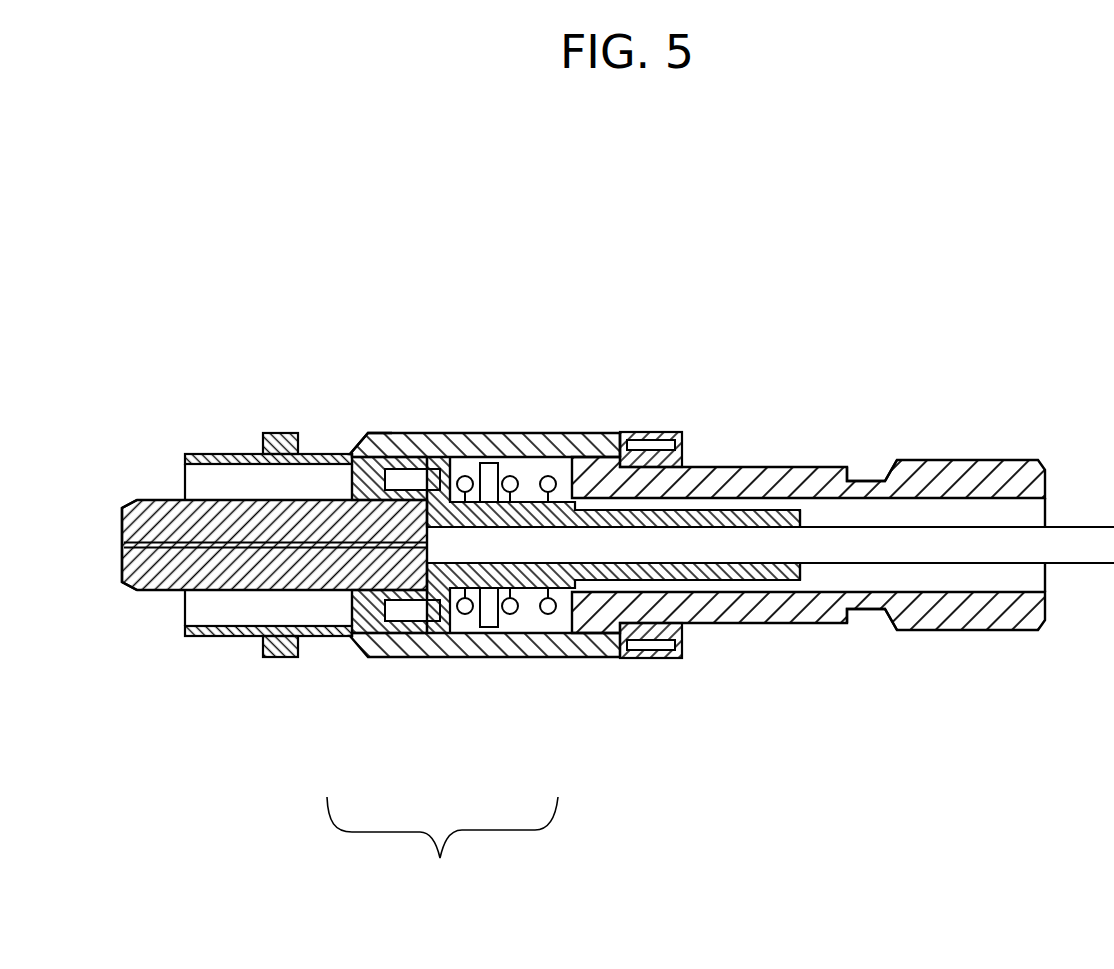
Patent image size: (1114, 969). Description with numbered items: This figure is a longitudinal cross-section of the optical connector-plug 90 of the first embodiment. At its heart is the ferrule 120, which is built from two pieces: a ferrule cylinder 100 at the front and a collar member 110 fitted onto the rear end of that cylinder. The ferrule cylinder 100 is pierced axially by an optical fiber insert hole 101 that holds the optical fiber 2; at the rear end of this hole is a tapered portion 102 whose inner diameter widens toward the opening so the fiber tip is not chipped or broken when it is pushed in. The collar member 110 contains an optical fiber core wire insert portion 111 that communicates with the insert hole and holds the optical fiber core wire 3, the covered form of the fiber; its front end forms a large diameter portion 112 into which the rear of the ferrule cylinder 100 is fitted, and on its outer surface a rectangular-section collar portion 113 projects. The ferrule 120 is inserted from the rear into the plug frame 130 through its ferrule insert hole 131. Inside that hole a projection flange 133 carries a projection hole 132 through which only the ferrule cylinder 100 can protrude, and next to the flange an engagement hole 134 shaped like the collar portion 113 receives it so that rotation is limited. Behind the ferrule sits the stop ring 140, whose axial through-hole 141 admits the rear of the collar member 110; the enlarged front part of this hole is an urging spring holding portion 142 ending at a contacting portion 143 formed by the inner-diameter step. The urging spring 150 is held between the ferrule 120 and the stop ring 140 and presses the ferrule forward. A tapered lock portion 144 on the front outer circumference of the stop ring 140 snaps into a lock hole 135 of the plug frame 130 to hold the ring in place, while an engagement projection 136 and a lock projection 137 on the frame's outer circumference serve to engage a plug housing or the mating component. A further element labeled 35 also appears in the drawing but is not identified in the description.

The optical fiber 2 is at (237, 548).
The optical fiber core wire 3 is at (983, 550).
The flange 35 is at (370, 512).
The optical connector-plug 90 is at (693, 333).
The ferrule cylinder 100 is at (307, 563).
The optical fiber insert hole 101 is at (190, 536).
The tapered portion 102 is at (437, 475).
The collar member 110 is at (527, 660).
The optical fiber core wire insert portion 111 is at (765, 527).
The large diameter portion 112 is at (413, 470).
The collar portion 113 is at (412, 658).
The ferrule 120 is at (442, 850).
The plug frame 130 is at (490, 433).
The ferrule insert hole 131 is at (190, 483).
The projection hole 132 is at (398, 500).
The projection flange 133 is at (388, 470).
The engagement hole 134 is at (432, 660).
The lock hole 135 is at (620, 457).
The engagement projection 136 is at (280, 433).
The lock projection 137 is at (513, 433).
The stop ring 140 is at (750, 612).
The through-hole 141 is at (838, 612).
The urging spring holding portion 142 is at (583, 660).
The contacting portion 143 is at (620, 432).
The lock portion 144 is at (627, 432).
The urging spring 150 is at (560, 660).